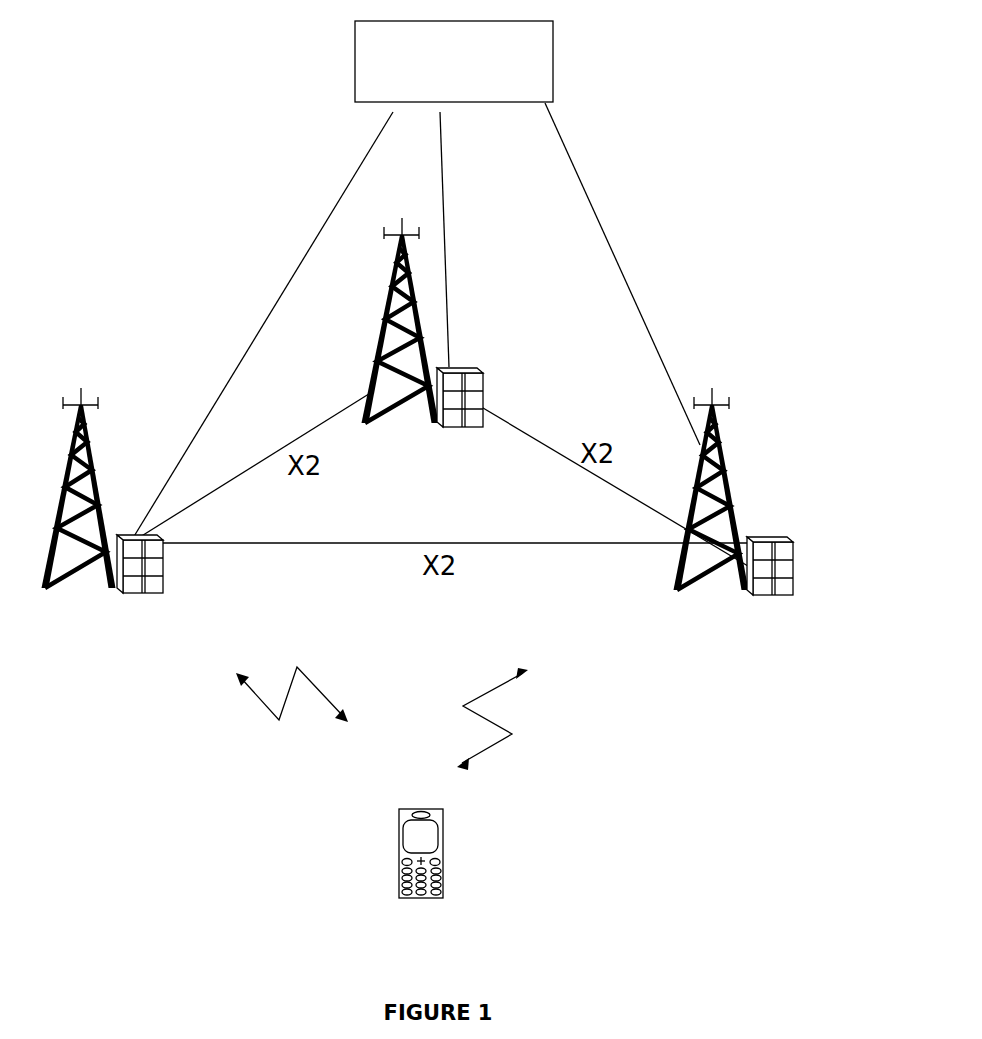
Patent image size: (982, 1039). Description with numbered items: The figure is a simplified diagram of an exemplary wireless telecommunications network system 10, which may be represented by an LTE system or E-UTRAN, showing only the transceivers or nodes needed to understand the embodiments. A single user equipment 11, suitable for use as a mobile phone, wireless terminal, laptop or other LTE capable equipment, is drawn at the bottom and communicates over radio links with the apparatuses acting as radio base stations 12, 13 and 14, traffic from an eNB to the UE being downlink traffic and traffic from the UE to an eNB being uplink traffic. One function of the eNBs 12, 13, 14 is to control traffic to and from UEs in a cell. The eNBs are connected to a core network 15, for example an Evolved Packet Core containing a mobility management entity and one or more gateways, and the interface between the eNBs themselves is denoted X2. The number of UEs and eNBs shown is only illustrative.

The wireless communication system 10 is at (698, 823).
The user equipment 11 is at (437, 948).
The radio base station 12 is at (133, 540).
The radio base station 13 is at (768, 527).
The radio base station 14 is at (486, 384).
The core network 15 is at (562, 67).